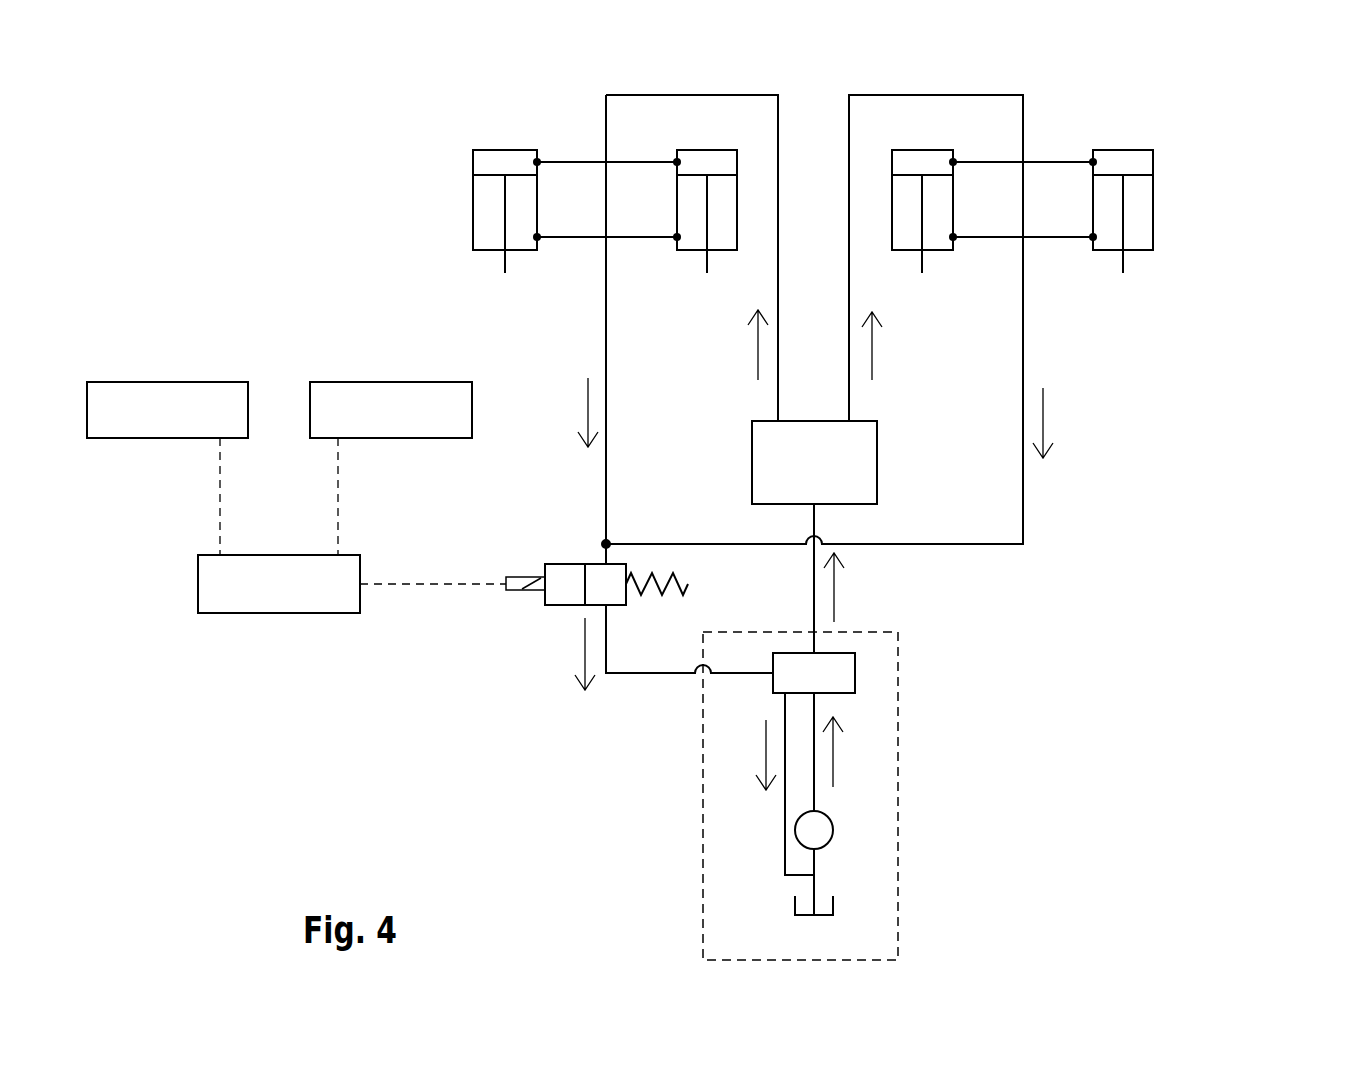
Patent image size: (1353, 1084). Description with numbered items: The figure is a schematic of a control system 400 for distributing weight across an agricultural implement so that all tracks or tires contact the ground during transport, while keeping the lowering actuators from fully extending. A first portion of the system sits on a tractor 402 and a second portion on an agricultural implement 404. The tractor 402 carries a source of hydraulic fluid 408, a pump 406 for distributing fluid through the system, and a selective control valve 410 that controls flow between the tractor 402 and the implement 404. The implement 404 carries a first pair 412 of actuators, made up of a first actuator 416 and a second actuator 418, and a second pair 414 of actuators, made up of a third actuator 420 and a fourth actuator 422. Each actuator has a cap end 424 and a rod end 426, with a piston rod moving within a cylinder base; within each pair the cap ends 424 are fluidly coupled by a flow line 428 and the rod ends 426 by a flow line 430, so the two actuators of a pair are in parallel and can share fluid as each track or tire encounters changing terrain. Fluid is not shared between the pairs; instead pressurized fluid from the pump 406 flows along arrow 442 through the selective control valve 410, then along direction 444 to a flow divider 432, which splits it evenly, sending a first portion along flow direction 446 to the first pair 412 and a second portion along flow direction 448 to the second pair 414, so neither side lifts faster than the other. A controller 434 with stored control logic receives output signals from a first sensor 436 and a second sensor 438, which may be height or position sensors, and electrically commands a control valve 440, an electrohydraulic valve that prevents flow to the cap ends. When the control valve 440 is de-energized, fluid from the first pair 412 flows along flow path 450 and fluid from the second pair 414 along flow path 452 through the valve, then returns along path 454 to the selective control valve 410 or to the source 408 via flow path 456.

The control system 400 is at (183, 165).
The tractor 402 is at (703, 835).
The agricultural implement 404 is at (1122, 573).
The pump 406 is at (833, 830).
The source of hydraulic fluid 408 is at (795, 905).
The selective control valve (SCV) 410 is at (855, 673).
The first pair of actuators 412 is at (442, 123).
The second pair of actuators 414 is at (1192, 255).
The first actuator 416 is at (458, 192).
The second actuator 418 is at (743, 213).
The third actuator 420 is at (887, 205).
The fourth actuator 422 is at (1160, 203).
The cap end 424 is at (505, 150).
The rod end 426 is at (490, 252).
The flow line 428 is at (578, 162).
The flow line 430 is at (570, 237).
The flow divider 432 is at (877, 460).
The controller 434 is at (278, 613).
The first sensor 436 is at (165, 382).
The second sensor 438 is at (412, 438).
The control valve 440 is at (562, 564).
The arrow (flow direction) 442 is at (833, 752).
The flow direction 444 is at (834, 590).
The flow direction 446 is at (758, 370).
The flow direction 448 is at (873, 368).
The flow path 450 is at (588, 398).
The flow path 452 is at (1043, 405).
The return path 454 is at (585, 655).
The flow path 456 is at (766, 755).